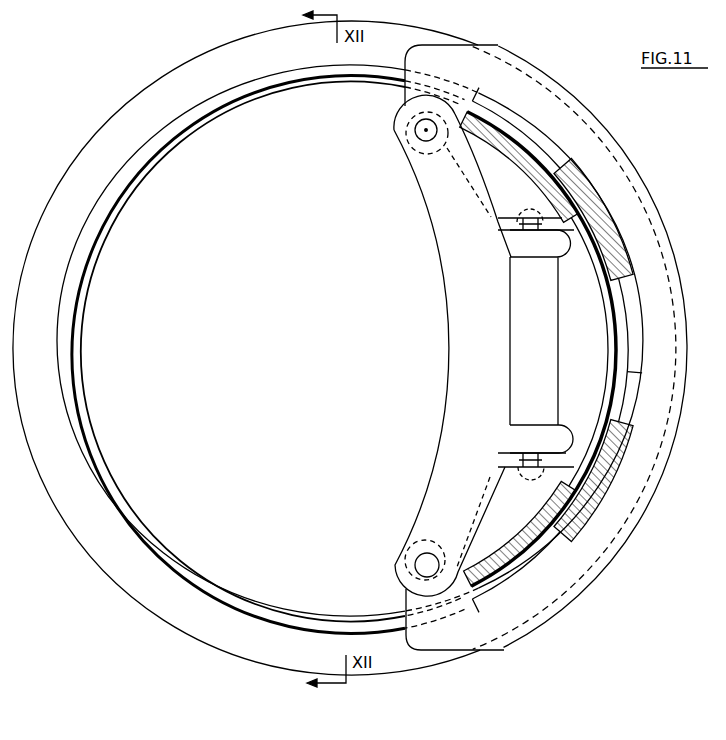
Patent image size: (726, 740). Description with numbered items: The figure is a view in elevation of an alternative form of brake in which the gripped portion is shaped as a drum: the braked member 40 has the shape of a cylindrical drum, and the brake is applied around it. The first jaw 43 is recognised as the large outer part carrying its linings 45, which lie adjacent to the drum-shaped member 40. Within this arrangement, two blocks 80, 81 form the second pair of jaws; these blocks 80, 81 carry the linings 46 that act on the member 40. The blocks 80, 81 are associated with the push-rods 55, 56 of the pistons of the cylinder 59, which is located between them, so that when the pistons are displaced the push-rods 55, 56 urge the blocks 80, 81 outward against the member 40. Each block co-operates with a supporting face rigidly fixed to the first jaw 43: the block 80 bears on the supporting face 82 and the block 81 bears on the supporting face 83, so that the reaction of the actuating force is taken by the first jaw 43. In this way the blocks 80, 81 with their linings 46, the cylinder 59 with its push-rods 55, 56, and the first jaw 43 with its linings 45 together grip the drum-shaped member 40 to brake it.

The member 40 is at (643, 373).
The first jaw 43 is at (678, 286).
The linings 45 is at (618, 230).
The linings 46 is at (540, 168).
The push-rod 55 is at (499, 221).
The push-rod 56 is at (505, 462).
The cylinder 59 is at (542, 302).
The block 80 is at (506, 177).
The block 81 is at (507, 511).
The supporting face 82 is at (427, 147).
The supporting face 83 is at (452, 560).